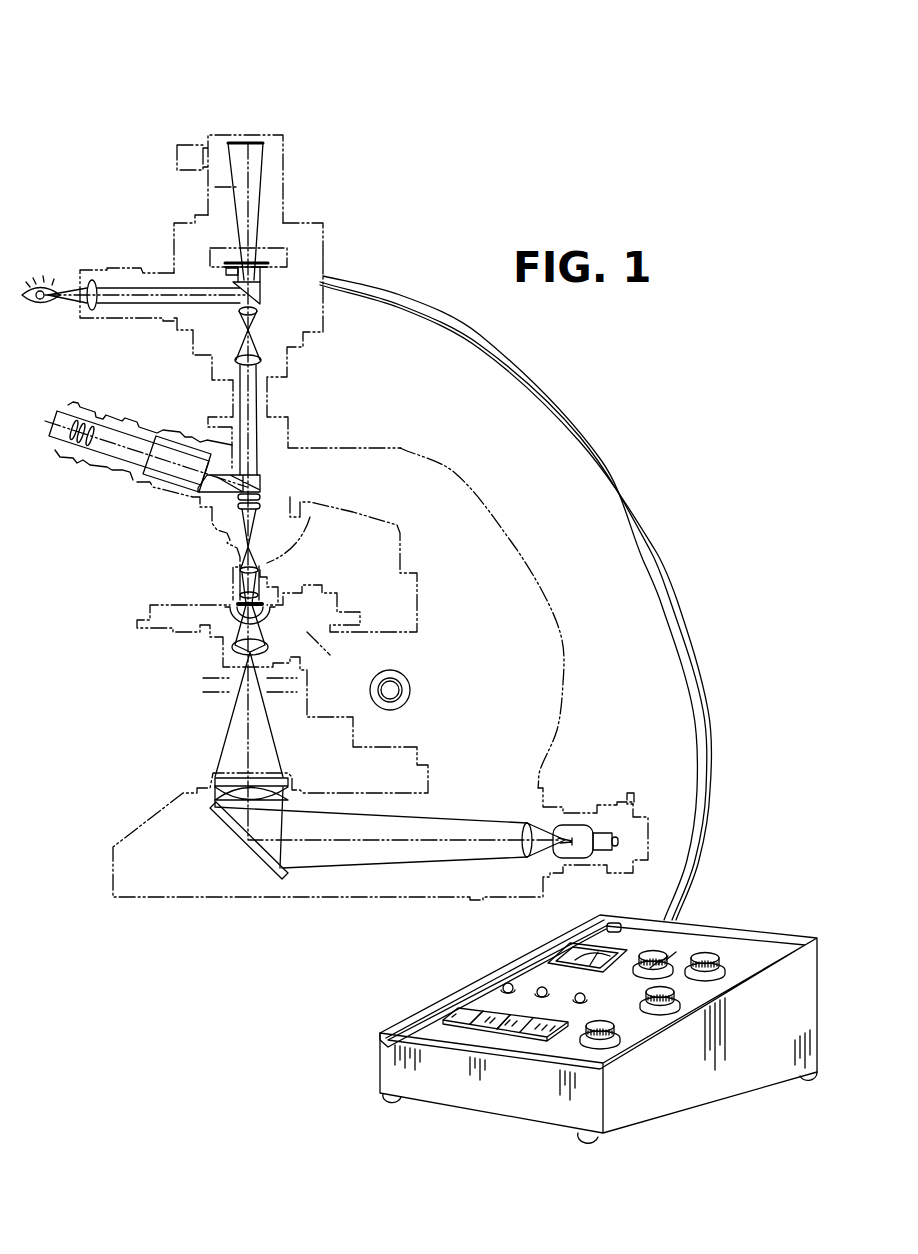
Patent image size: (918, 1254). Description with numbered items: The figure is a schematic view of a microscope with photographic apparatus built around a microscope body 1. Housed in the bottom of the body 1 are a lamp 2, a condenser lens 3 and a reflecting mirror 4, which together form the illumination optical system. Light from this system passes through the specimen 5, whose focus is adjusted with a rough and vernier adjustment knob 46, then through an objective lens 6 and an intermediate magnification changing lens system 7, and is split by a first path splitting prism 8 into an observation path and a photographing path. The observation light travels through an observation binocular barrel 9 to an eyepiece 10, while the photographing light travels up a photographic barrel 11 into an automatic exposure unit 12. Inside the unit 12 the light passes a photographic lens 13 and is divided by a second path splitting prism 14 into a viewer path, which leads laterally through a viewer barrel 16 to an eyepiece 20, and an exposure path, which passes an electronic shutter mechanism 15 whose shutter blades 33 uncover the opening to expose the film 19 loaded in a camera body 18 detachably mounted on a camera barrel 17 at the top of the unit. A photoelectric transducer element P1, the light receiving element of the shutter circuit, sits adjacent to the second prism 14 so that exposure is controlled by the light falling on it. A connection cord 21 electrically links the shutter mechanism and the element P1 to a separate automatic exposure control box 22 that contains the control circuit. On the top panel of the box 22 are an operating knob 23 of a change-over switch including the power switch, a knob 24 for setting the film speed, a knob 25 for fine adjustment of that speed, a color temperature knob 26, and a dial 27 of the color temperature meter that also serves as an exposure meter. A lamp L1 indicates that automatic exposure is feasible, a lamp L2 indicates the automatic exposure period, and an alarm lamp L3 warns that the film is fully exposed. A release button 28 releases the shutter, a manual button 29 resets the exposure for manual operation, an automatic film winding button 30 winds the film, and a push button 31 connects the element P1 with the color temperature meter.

The microscope body 1 is at (550, 612).
The lamp 2 is at (573, 825).
The condenser lens 3 is at (528, 822).
The reflecting mirror 4 is at (243, 836).
The specimen 5 is at (242, 603).
The objective lens 6 is at (265, 565).
The intermediate magnification changing lens system 7 is at (265, 493).
The first path splitting prism 8 is at (233, 474).
The observation binocular barrel 9 is at (130, 488).
The eyepiece 10 is at (90, 462).
The photographic barrel 11 is at (268, 390).
The automatic exposure unit 12 is at (323, 322).
The photographic lens 13 is at (233, 323).
The second path splitting prism 14 is at (262, 292).
The electronic shutter mechanism 15 is at (287, 258).
The viewer barrel 16 is at (145, 272).
The camera barrel 17 is at (273, 210).
The camera body 18 is at (283, 146).
The film 19 is at (251, 143).
The eyepiece 20 is at (95, 311).
The connection cord 21 is at (592, 450).
The automatic exposure control box 22 is at (810, 987).
The operating knob 23 is at (622, 1038).
The film speed setting knob 24 is at (680, 998).
The film speed fine adjustment knob 25 is at (712, 955).
The color temperature knob 26 is at (662, 958).
The dial 27 is at (565, 958).
The release button 28 is at (535, 1035).
The manual button 29 is at (497, 1030).
The automatic film winding button 30 is at (470, 1028).
The push button 31 is at (440, 1017).
The shutter blades 33 is at (258, 262).
The rough and vernier adjustment knob 46 is at (410, 690).
The photoelectric transducer element P1 is at (226, 272).
The lamp L1 is at (585, 995).
The lamp L2 is at (540, 988).
The alarm lamp L3 is at (503, 987).